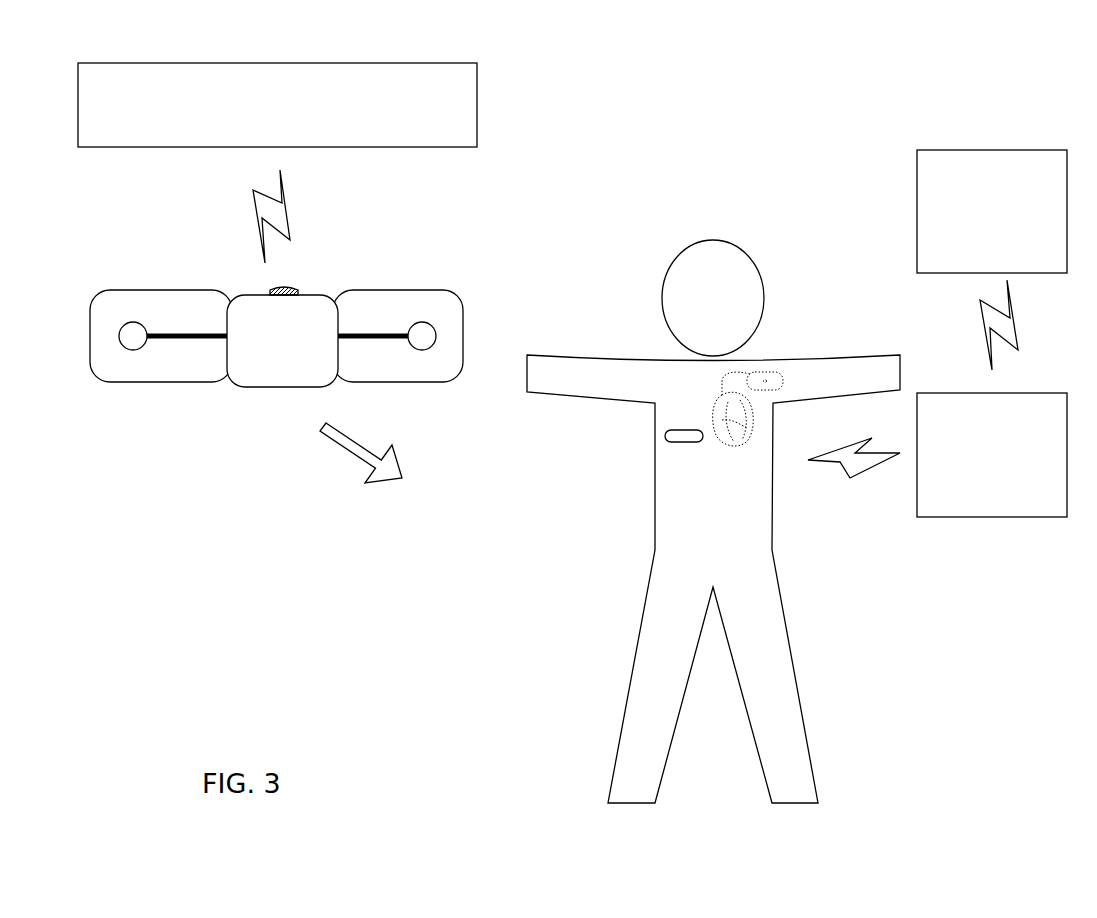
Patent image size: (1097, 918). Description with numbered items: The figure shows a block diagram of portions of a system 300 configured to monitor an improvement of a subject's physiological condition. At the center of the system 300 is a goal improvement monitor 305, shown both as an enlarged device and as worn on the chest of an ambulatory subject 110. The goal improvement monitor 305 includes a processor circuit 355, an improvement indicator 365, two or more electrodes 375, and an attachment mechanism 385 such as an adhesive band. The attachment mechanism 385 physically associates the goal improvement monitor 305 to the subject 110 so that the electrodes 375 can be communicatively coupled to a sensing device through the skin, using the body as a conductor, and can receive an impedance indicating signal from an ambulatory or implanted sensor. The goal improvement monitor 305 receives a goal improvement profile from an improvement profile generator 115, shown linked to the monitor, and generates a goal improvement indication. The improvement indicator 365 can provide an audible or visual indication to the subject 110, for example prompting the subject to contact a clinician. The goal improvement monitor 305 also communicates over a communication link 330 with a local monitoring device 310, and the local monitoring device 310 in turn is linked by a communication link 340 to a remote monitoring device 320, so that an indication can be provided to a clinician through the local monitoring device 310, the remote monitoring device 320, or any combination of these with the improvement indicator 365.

The improvement profile generator 115 is at (300, 63).
The system 300 is at (634, 107).
The goal improvement monitor 305 is at (417, 347).
The attachment mechanism 385 is at (157, 290).
The electrodes 375 is at (134, 322).
The improvement indicator 365 is at (287, 288).
The processor circuit 355 is at (282, 389).
The ambulatory subject 110 is at (793, 356).
The communication link 330 is at (850, 477).
The communication link 340 is at (1016, 328).
The local monitoring device 310 is at (991, 517).
The remote monitoring device 320 is at (993, 150).